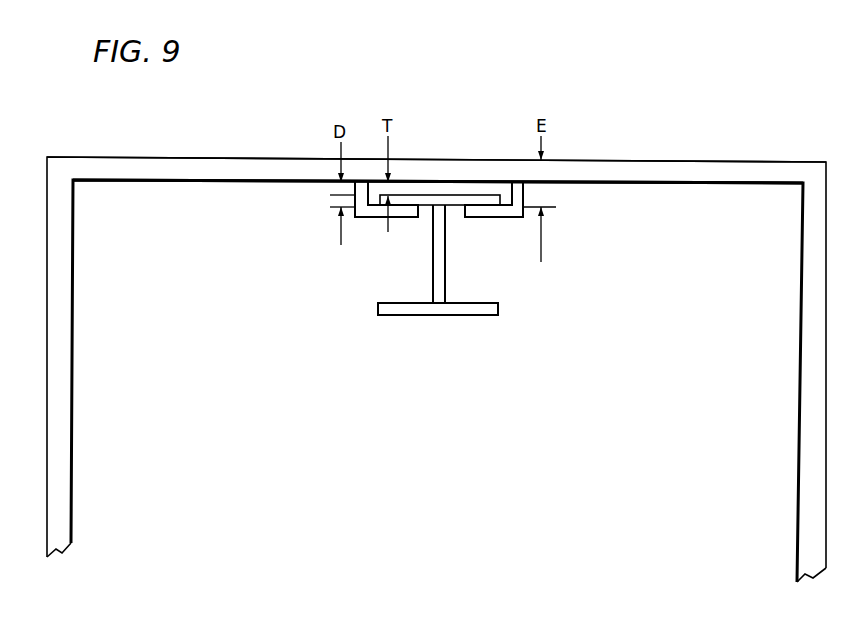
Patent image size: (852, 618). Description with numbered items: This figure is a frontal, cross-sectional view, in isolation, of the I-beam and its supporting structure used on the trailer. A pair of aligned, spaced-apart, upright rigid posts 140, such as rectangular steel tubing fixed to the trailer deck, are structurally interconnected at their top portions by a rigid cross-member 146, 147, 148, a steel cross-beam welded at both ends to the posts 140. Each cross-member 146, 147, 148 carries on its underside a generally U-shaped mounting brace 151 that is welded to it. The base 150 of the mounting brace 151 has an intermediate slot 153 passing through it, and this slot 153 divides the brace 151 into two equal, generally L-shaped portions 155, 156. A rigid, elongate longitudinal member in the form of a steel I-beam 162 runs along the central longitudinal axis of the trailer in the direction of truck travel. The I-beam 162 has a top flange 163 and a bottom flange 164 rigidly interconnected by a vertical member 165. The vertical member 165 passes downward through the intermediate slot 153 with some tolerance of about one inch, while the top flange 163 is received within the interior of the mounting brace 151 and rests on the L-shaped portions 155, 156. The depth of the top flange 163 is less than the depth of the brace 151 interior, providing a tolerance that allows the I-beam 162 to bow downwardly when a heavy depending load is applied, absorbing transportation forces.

The upright post 140 is at (70, 230).
The cross-member 146 is at (436, 139).
The cross-member 147 is at (436, 139).
The cross-member 148 is at (258, 167).
The base of mounting brace 150 is at (400, 212).
The mounting brace 151 is at (363, 222).
The intermediate slot 153 is at (452, 210).
The L-shaped portion 155 is at (380, 219).
The L-shaped portion 156 is at (490, 213).
The I-beam 162 is at (451, 253).
The top flange 163 is at (437, 200).
The bottom flange 164 is at (472, 308).
The vertical member 165 is at (440, 274).